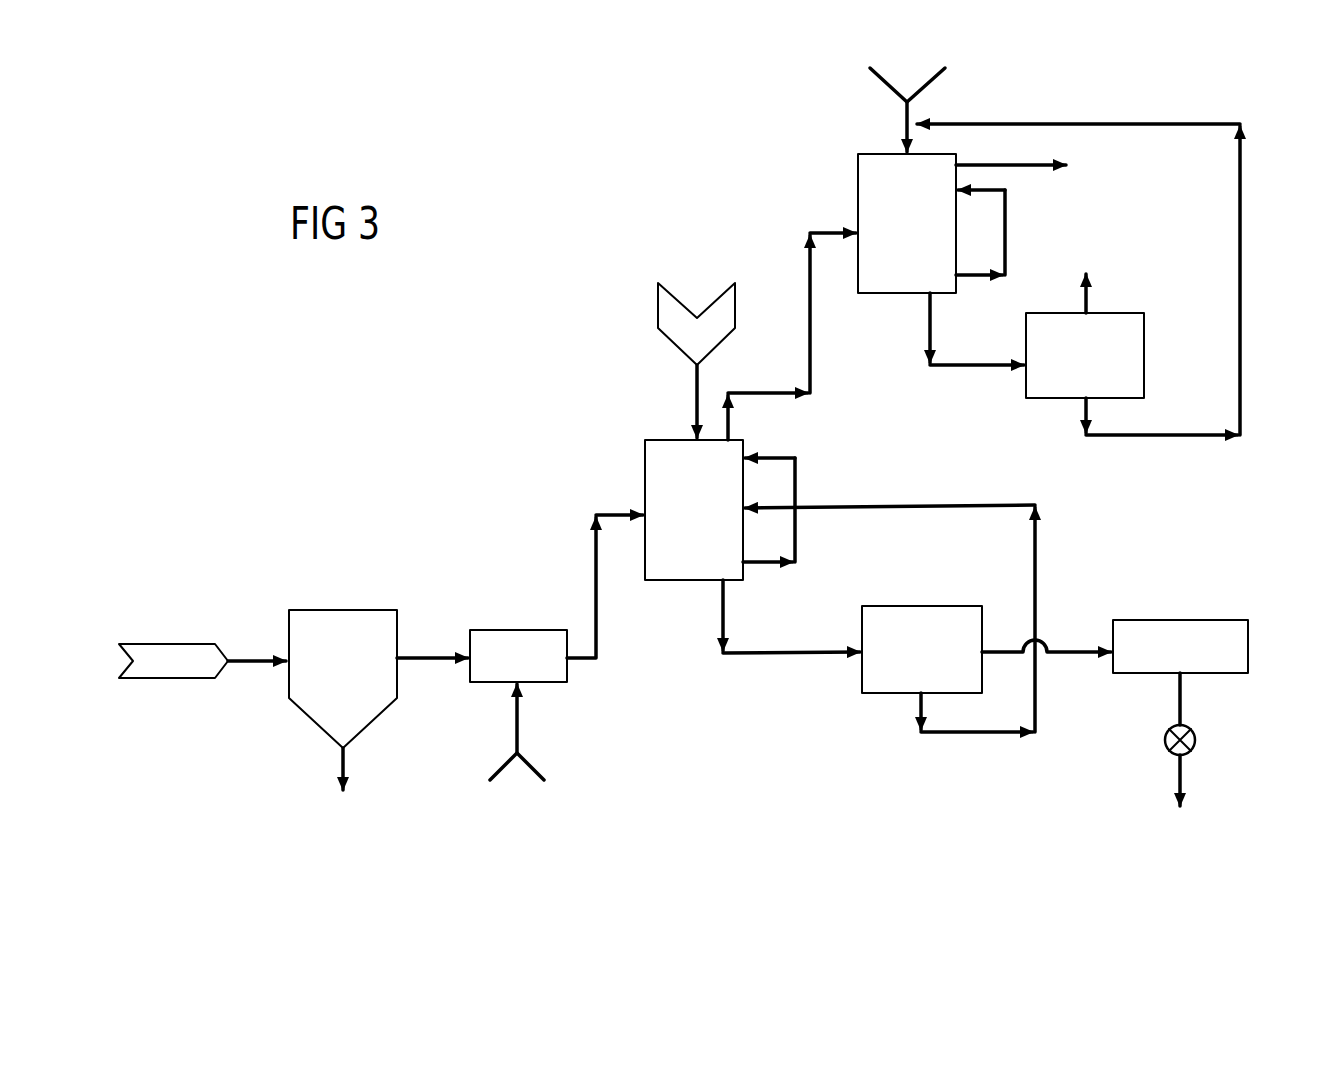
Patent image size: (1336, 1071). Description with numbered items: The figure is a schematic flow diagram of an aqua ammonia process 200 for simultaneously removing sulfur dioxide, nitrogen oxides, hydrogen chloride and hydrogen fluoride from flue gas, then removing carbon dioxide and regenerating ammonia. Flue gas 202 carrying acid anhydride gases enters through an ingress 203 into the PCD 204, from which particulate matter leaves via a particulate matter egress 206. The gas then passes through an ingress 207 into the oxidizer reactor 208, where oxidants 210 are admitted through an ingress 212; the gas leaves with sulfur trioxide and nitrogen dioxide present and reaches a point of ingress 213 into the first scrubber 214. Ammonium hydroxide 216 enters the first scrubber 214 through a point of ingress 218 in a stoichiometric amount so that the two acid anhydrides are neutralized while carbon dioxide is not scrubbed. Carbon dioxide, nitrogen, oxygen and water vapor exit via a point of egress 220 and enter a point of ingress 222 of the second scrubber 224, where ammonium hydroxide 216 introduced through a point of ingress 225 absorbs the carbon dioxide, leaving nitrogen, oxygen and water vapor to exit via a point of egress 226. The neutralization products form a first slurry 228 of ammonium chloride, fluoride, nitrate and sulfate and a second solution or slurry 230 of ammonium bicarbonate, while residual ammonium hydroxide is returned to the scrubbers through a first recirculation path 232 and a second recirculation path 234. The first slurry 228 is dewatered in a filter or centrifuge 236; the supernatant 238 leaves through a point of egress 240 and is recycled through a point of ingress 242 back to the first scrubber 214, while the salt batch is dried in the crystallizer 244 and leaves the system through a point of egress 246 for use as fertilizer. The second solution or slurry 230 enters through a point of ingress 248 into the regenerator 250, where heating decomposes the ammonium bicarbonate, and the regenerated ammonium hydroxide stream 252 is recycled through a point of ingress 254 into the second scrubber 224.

The process 200 is at (702, 812).
The flue gas 202 is at (152, 642).
The ingress of the flue gas to the PCD 203 is at (245, 653).
The PCD 204 is at (345, 610).
The particulate matter egress 206 is at (333, 790).
The ingress of the flue gas to the oxidizer reactor 207 is at (432, 650).
The oxidizer reactor 208 is at (508, 630).
The oxidants 210 is at (521, 790).
The ingress of the oxidants 212 is at (528, 700).
The point of ingress into the first scrubber 213 is at (590, 551).
The first scrubber 214 is at (643, 468).
The ammonium hydroxide 216 is at (690, 316).
The point of ingress 218 is at (690, 405).
The point of egress 220 is at (735, 422).
The point of ingress 222 is at (812, 232).
The second scrubber 224 is at (858, 170).
The point of ingress 225 is at (900, 120).
The point of egress 226 is at (1042, 170).
The first slurry 228 is at (718, 660).
The second solution or slurry 230 is at (928, 363).
The first recirculation path 232 is at (797, 545).
The second recirculation path 234 is at (1018, 262).
The means to effect filtration or centrifugation 236 is at (858, 684).
The supernatant 238 is at (912, 712).
The point of egress 240 is at (945, 737).
The point of ingress 242 is at (820, 506).
The crystallizer (dryer) 244 is at (1170, 618).
The point of egress 246 is at (1200, 727).
The point of ingress 248 is at (990, 368).
The regenerator 250 is at (1115, 310).
The regenerated ammonium hydroxide stream 252 is at (1086, 440).
The point of ingress 254 is at (1045, 118).